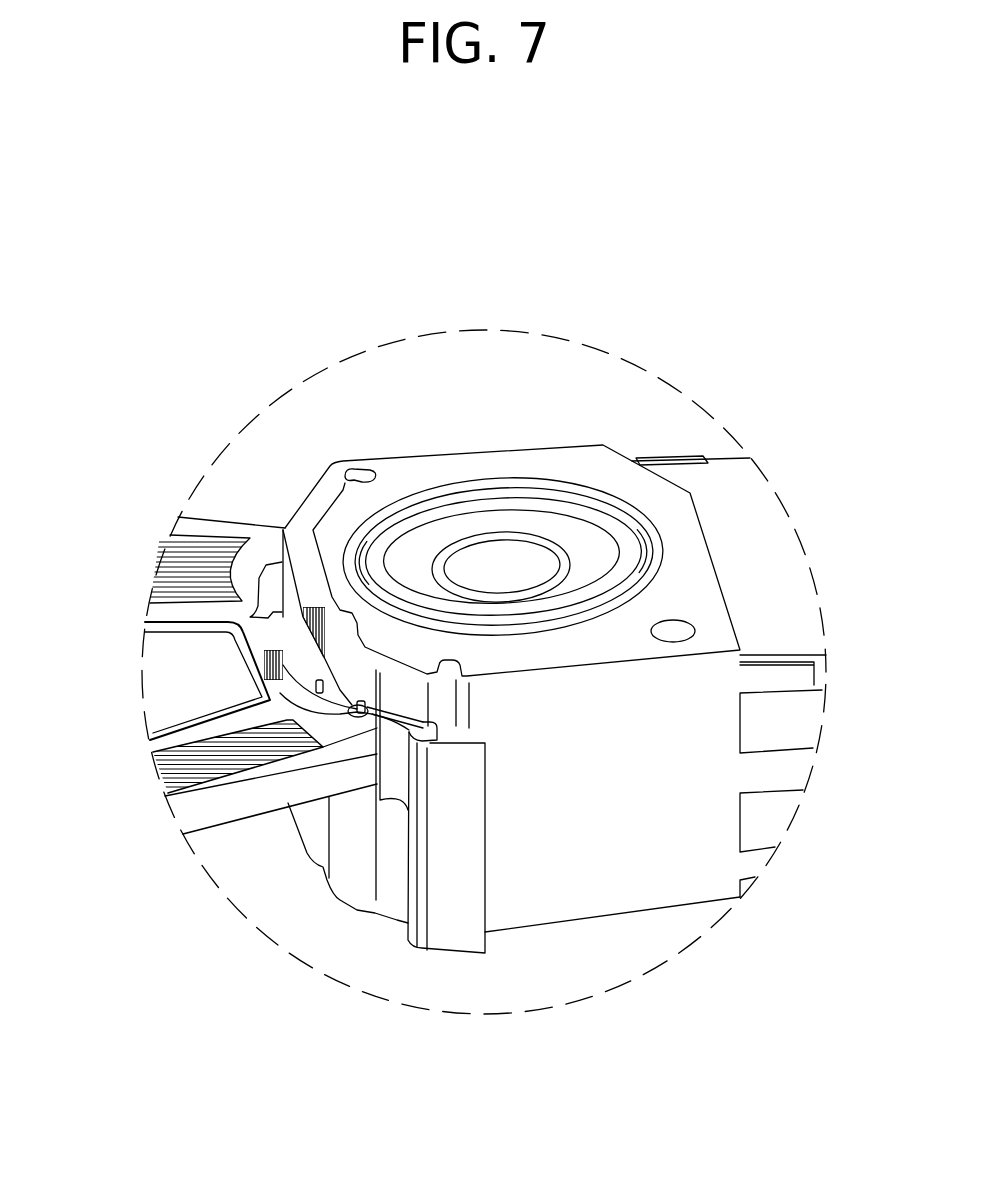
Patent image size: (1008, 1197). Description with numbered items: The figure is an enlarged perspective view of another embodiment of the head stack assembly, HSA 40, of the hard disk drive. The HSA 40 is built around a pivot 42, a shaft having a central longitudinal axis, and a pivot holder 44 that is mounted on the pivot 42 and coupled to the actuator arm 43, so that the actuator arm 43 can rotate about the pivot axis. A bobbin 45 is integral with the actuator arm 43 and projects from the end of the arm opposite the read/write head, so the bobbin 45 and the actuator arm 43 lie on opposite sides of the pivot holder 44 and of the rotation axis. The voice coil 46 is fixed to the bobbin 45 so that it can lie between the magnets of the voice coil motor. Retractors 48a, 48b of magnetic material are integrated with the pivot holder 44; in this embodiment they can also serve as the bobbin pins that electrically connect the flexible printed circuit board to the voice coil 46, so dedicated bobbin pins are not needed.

The HSA 40 is at (163, 219).
The pivot 42 is at (502, 567).
The actuator arm 43 is at (782, 673).
The pivot holder 44 is at (363, 422).
The bobbin 45 is at (200, 527).
The voice coil 46 is at (158, 571).
The retractor 48a is at (318, 695).
The retractor 48b is at (358, 716).